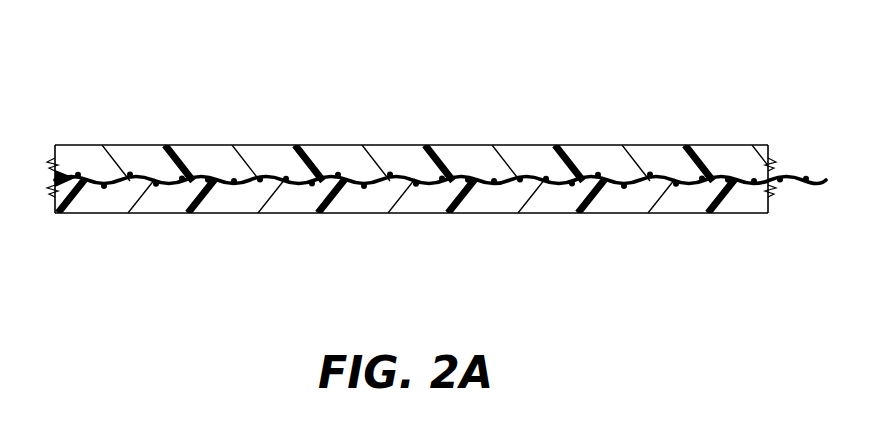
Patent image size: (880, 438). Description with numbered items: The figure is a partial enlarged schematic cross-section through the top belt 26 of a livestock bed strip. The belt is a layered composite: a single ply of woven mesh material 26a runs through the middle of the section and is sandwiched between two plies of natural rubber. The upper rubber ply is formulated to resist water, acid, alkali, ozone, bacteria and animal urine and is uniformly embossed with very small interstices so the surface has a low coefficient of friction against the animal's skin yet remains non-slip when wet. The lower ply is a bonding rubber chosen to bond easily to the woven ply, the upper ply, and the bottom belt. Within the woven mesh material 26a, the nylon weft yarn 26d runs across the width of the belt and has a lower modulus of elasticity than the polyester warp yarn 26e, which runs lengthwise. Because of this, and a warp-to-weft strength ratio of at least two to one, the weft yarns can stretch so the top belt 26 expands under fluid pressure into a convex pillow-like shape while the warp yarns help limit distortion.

The top belt 26 is at (127, 146).
The woven mesh material 26a is at (812, 178).
The nylon weft yarn 26d is at (480, 178).
The polyester warp yarn 26e is at (400, 178).